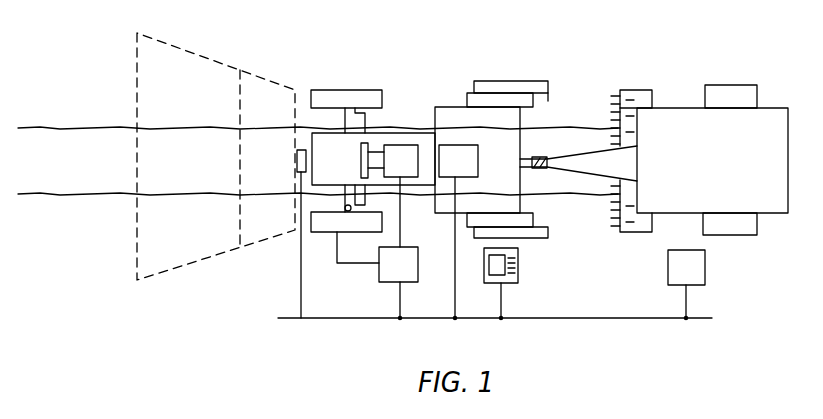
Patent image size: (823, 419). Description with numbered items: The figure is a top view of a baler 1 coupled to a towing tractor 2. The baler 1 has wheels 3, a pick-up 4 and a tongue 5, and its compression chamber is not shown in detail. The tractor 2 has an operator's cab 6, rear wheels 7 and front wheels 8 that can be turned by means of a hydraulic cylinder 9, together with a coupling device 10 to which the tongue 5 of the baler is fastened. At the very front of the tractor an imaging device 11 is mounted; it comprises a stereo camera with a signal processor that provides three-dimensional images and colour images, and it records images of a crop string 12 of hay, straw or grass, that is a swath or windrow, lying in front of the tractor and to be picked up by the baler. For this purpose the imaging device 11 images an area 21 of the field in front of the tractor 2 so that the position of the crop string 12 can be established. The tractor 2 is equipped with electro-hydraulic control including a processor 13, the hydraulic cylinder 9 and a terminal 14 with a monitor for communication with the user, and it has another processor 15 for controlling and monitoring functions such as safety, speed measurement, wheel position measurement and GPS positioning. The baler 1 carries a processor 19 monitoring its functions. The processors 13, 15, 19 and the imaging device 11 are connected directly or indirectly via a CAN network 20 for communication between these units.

The baler 1 is at (724, 76).
The towing tractor 2 is at (451, 80).
The wheels 3 is at (746, 95).
The pick-up 4 is at (632, 94).
The tongue 5 is at (590, 156).
The operator's cab 6 is at (502, 125).
The rear wheels 7 is at (538, 96).
The front wheels 8 is at (328, 92).
The hydraulic cylinder 9 is at (370, 150).
The coupling device 10 is at (535, 157).
The imaging device 11 is at (297, 160).
The crop string 12 is at (57, 125).
The processor 13 is at (378, 266).
The terminal 14 is at (518, 272).
The processor 15 is at (484, 176).
The processor 19 is at (705, 278).
The CAN network 20 is at (662, 319).
The area 21 is at (242, 70).